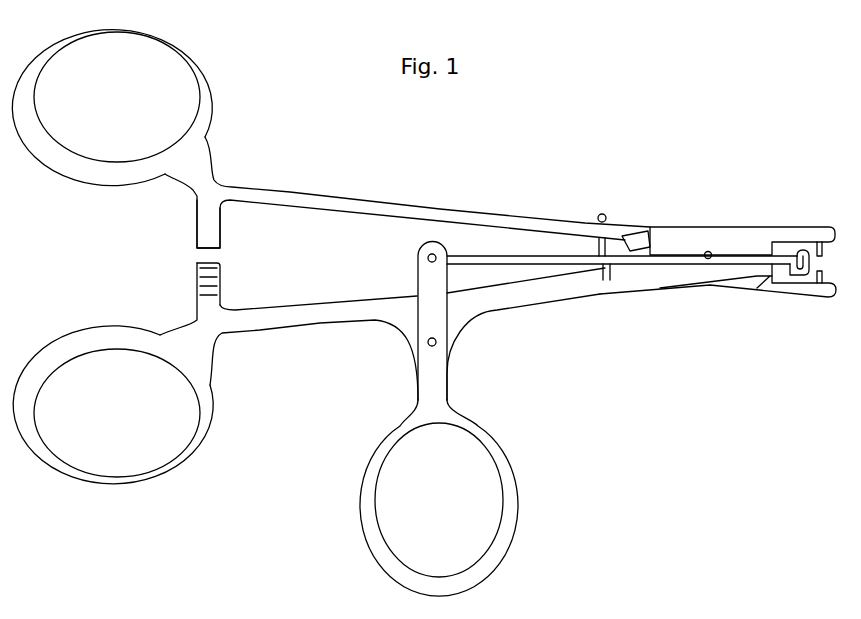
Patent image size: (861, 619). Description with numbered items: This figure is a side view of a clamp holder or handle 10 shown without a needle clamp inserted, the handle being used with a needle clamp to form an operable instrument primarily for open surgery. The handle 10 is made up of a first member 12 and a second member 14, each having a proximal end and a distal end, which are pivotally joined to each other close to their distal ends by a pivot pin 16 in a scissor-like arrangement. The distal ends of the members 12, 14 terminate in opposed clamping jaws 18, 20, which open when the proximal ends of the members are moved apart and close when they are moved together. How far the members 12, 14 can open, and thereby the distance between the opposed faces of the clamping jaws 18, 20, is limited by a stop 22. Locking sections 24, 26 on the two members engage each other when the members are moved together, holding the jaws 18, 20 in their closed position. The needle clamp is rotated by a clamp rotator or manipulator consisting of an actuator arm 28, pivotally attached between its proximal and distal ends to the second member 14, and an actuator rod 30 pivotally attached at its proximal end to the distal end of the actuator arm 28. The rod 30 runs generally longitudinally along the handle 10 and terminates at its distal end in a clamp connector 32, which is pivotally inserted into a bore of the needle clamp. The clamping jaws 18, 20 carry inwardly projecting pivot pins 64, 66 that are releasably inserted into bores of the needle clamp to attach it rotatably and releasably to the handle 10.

The handle 10 is at (473, 193).
The first member 12 is at (357, 203).
The second member 14 is at (323, 316).
The pivot pin 16 is at (708, 251).
The clamping jaw 18 is at (803, 225).
The clamping jaw 20 is at (787, 293).
The stop 22 is at (636, 232).
The locking section 24 is at (202, 236).
The locking section 26 is at (197, 276).
The actuator arm 28 is at (440, 396).
The actuator rod 30 is at (656, 264).
The clamp connector 32 is at (763, 257).
The pivot pin 64 is at (818, 241).
The pivot pin 66 is at (822, 284).